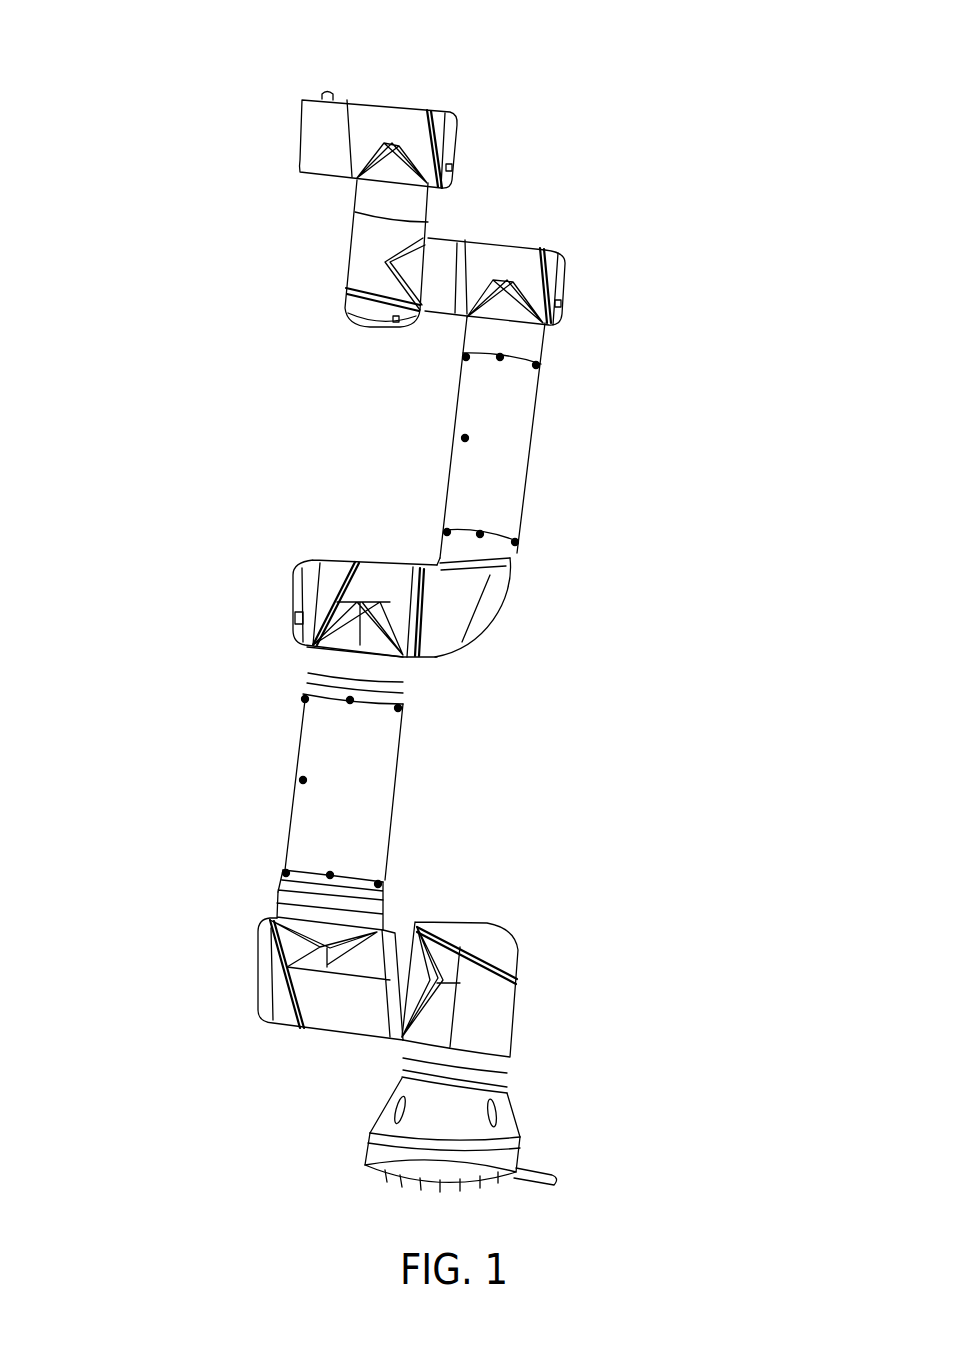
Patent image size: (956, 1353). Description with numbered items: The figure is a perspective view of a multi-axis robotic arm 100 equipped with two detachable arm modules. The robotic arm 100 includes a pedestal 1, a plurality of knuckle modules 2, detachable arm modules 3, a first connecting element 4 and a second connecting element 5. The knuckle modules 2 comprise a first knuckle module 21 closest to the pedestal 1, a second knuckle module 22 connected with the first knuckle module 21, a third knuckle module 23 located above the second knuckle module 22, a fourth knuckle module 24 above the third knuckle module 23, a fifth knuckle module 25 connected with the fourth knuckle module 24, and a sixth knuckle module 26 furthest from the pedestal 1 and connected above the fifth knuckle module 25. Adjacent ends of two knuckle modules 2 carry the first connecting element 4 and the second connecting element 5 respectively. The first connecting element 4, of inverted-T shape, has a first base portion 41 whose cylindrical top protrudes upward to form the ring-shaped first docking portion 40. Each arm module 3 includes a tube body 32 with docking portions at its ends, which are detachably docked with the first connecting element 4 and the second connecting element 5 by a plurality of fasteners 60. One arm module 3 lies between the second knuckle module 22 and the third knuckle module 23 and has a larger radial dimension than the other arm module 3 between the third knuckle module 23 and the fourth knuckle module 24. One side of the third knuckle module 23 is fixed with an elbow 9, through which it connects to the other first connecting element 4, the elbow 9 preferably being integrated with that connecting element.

The multi-axis robotic arm 100 is at (97, 44).
The pedestal 1 is at (518, 1135).
The knuckle modules 2 is at (461, 168).
The detachable arm module 3 is at (533, 457).
The first connecting element 4 is at (508, 557).
The second connecting element 5 is at (533, 340).
The elbow 9 is at (487, 610).
The first knuckle module 21 is at (498, 998).
The second knuckle module 22 is at (347, 1025).
The third knuckle module 23 is at (330, 578).
The fourth knuckle module 24 is at (480, 250).
The fifth knuckle module 25 is at (360, 279).
The sixth knuckle module 26 is at (385, 120).
The tube body 32 is at (380, 758).
The first docking portion 40 is at (292, 875).
The first base portion 41 is at (293, 902).
The fasteners 60 is at (540, 364).